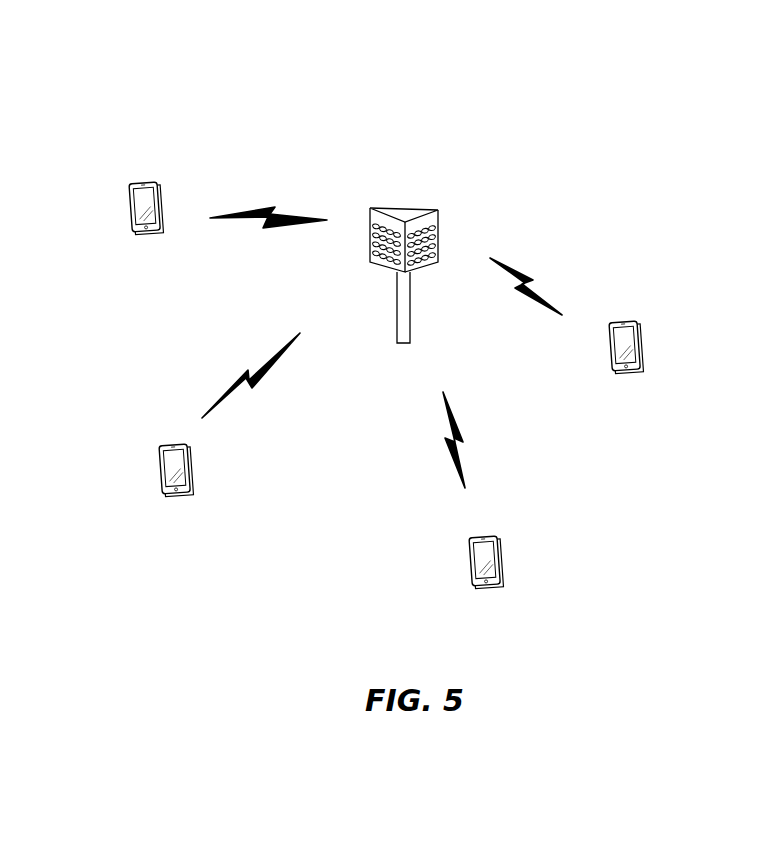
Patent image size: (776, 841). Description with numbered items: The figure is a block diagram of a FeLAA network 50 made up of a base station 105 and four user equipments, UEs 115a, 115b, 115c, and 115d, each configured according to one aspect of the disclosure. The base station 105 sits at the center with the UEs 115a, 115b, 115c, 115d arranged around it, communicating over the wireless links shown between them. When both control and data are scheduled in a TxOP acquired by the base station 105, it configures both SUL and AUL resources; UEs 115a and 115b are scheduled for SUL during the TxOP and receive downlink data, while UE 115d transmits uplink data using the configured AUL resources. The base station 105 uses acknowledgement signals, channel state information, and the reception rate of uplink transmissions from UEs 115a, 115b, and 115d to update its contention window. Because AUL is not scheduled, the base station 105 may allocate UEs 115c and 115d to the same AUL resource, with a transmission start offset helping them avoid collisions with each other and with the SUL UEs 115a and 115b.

The FeLAA network 50 is at (512, 70).
The base station 105 is at (396, 318).
The UE 115a is at (128, 190).
The UE 115b is at (637, 341).
The UE 115c is at (158, 457).
The UE 115d is at (497, 556).